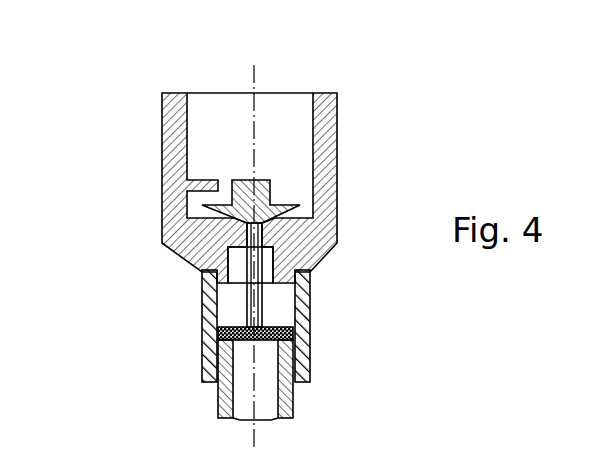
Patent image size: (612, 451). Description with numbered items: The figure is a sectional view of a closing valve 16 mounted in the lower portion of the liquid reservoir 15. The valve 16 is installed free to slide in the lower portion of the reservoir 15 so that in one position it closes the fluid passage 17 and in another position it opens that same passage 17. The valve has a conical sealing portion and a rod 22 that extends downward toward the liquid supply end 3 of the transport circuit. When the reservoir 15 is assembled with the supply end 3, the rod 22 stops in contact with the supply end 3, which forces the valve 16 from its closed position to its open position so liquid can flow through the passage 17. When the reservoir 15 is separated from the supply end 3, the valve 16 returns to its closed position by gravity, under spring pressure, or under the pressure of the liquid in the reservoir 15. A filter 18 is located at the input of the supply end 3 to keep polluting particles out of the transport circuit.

The liquid reservoir 15 is at (337, 108).
The closing valve 16 is at (245, 200).
The rod 22 is at (260, 225).
The fluid passage 17 is at (228, 260).
The filter 18 is at (310, 313).
The liquid supply end 3 is at (276, 355).